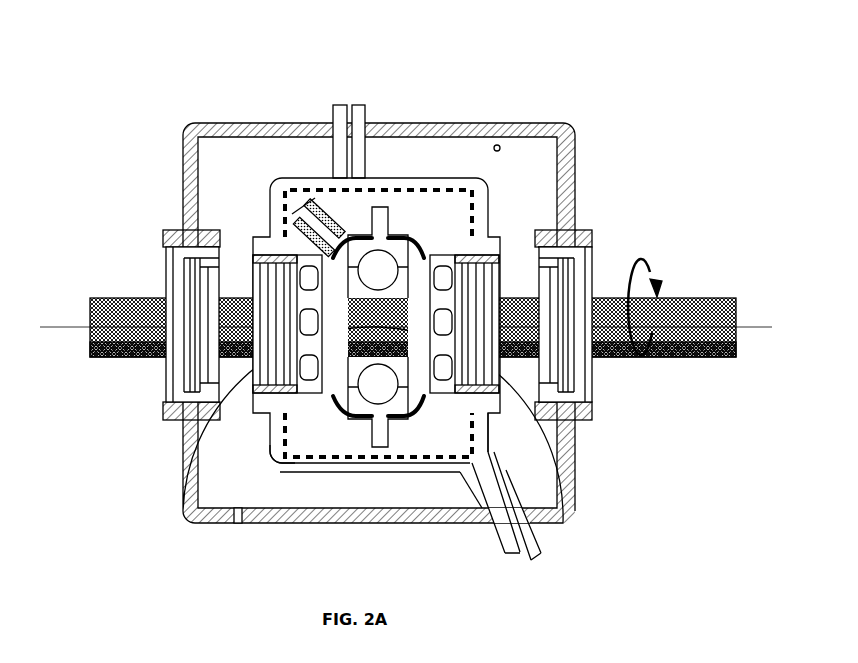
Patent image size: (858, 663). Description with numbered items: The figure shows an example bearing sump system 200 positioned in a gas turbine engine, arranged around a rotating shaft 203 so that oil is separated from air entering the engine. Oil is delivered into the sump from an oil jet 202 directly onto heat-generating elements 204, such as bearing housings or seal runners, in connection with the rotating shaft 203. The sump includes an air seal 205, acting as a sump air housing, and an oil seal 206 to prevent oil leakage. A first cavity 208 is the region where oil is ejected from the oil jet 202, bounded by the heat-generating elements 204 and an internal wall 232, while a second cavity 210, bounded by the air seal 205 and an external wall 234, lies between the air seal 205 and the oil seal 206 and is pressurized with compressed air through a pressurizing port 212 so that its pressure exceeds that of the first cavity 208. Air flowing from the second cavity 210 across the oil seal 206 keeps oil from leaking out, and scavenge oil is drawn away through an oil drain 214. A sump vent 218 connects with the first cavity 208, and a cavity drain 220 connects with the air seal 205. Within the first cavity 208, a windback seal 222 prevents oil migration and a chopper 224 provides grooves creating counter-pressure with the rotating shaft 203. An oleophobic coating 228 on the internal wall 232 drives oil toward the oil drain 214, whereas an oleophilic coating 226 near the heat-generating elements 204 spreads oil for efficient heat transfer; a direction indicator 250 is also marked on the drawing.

The bearing sump system 200 is at (745, 72).
The oil jet 202 is at (318, 212).
The rotating shaft 203 is at (703, 298).
The heat-generating elements 204 is at (378, 225).
The air seal 205 is at (192, 198).
The oil seal 206 is at (397, 467).
The first cavity 208 is at (452, 430).
The second cavity 210 is at (535, 148).
The pressurizing port 212 is at (498, 145).
The oil drain 214 is at (533, 560).
The sump vent 218 is at (358, 105).
The cavity drain 220 is at (238, 523).
The windback seal 222 is at (306, 375).
The chopper 224 is at (432, 268).
The oleophilic coating 226 is at (404, 236).
The oleophobic coating 228 is at (475, 197).
The internal wall 232 is at (295, 465).
The external wall 234 is at (432, 472).
The orientation reference 250 is at (778, 632).